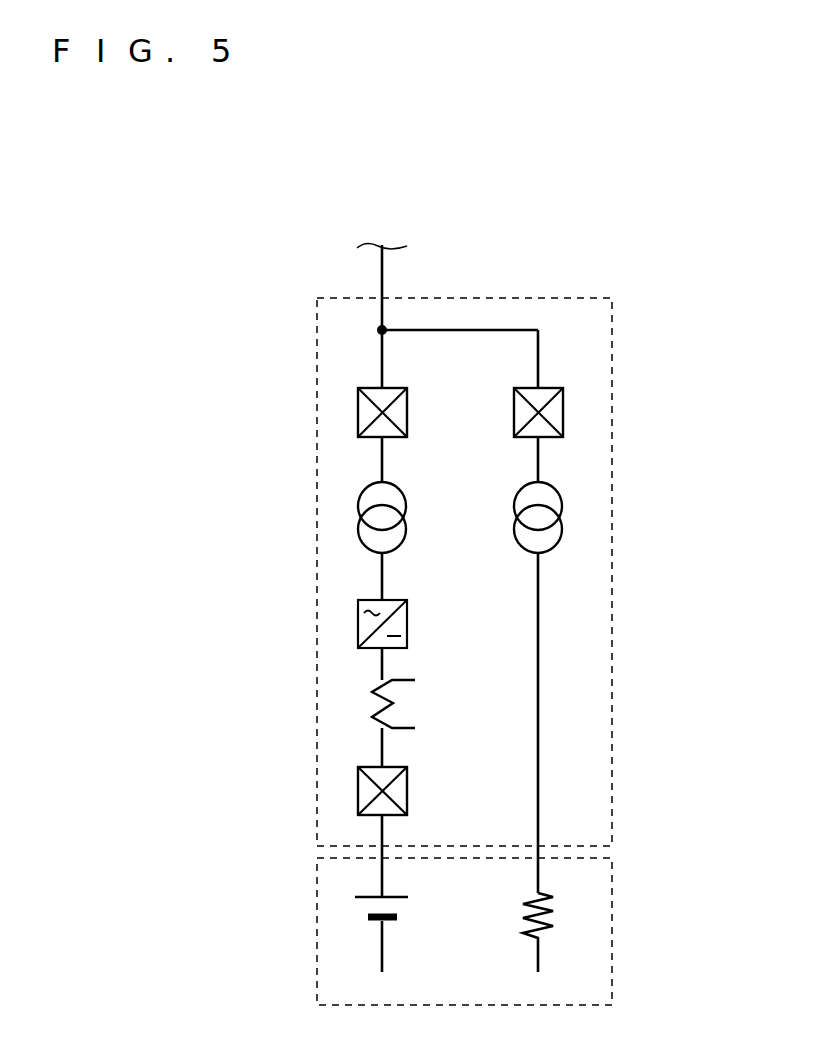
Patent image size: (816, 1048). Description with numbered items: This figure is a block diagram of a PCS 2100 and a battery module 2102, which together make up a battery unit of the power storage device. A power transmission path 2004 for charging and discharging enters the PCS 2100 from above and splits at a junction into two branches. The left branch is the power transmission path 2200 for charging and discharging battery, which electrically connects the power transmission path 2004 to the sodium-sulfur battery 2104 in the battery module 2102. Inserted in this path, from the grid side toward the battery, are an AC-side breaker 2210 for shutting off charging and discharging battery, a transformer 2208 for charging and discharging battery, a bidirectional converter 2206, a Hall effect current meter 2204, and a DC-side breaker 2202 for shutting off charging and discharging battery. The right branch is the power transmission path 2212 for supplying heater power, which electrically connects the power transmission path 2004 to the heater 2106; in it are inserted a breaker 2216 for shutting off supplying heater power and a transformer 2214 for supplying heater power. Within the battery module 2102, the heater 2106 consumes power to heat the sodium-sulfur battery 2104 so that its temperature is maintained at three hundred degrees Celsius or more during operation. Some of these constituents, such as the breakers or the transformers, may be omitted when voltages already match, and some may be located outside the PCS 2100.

The power transmission path for charging and discharging 2004 is at (384, 270).
The PCS 2100 is at (612, 332).
The power transmission path for charging and discharging battery 2200 is at (382, 463).
The AC-side breaker for shutting off charging and discharging battery 2210 is at (358, 415).
The transformer for charging and discharging battery 2208 is at (358, 532).
The bidirectional converter 2206 is at (358, 626).
The Hall effect current meter 2204 is at (372, 717).
The DC-side breaker for shutting off charging and discharging battery 2202 is at (358, 792).
The breaker for shutting off supplying heater power 2216 is at (563, 408).
The transformer for supplying heater power 2214 is at (563, 527).
The power transmission path for supplying heater power 2212 is at (538, 720).
The battery module 2102 is at (612, 966).
The sodium-sulfur battery 2104 is at (368, 910).
The heater 2106 is at (553, 900).